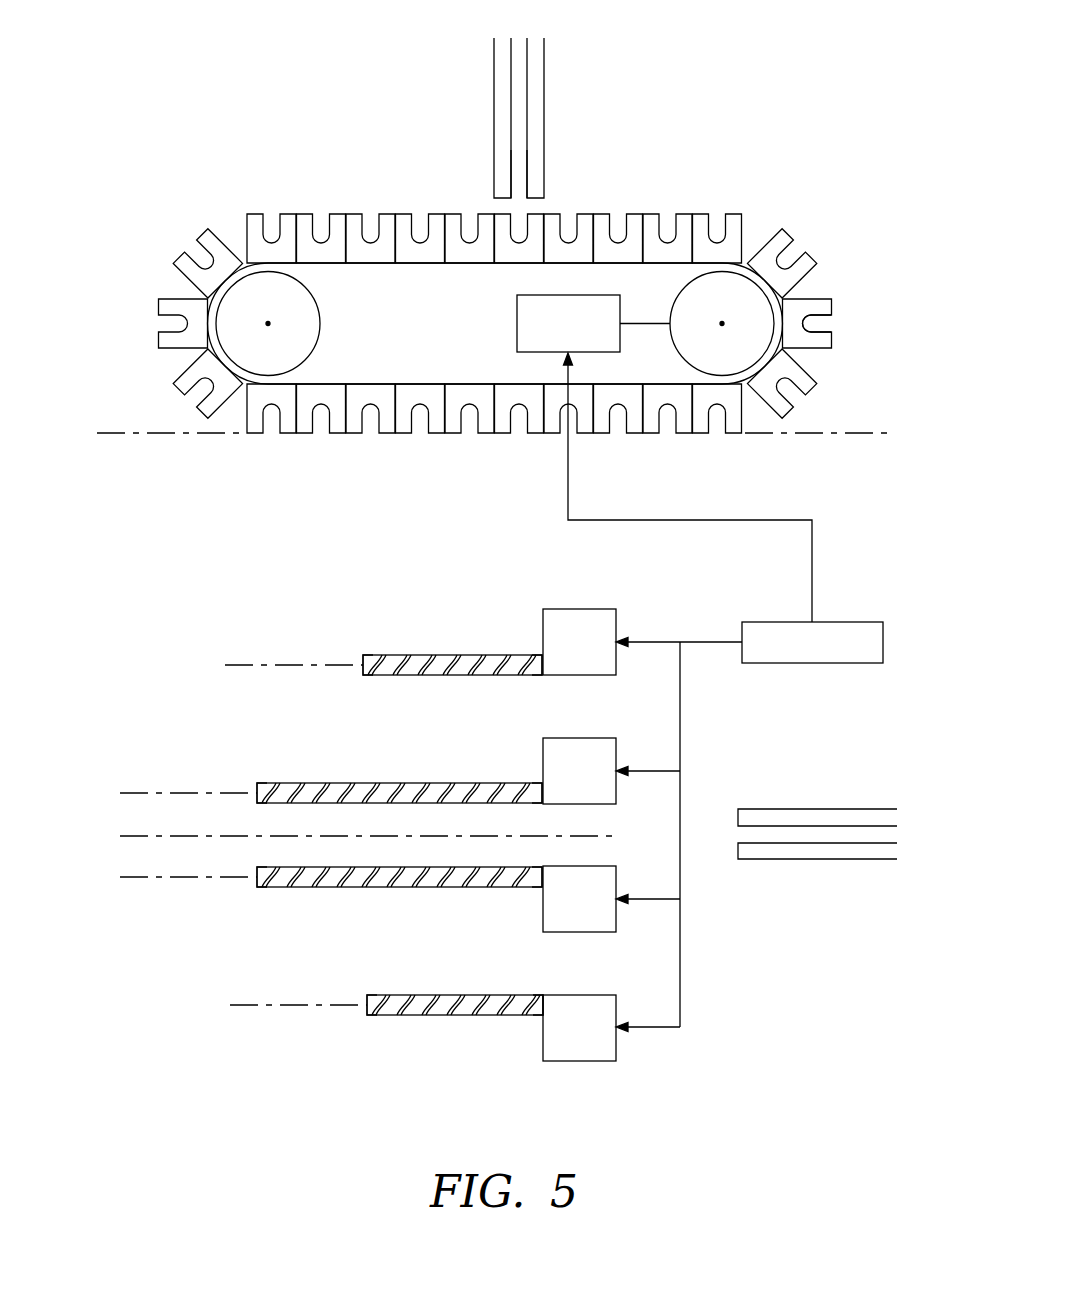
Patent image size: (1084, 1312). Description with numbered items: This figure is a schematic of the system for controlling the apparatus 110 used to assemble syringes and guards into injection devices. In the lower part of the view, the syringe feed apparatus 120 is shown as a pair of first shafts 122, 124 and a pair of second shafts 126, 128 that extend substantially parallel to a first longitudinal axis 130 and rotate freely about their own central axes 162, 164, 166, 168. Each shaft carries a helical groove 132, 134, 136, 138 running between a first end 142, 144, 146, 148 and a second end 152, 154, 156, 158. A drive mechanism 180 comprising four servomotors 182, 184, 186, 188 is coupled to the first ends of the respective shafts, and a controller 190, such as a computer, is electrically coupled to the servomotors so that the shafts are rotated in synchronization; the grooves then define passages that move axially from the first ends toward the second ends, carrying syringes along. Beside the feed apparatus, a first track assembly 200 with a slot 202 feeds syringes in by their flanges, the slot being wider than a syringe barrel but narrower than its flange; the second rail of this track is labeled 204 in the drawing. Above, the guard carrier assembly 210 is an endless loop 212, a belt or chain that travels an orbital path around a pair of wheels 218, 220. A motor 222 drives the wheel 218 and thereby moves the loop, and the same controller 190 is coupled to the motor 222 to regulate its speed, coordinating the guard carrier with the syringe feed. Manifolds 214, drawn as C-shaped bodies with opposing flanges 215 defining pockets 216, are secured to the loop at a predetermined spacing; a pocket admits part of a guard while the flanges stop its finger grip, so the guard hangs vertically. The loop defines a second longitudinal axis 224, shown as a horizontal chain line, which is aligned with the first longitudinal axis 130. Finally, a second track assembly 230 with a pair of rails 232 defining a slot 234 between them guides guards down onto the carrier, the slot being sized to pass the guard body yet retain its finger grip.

The apparatus 110 is at (285, 556).
The syringe feed apparatus 120 is at (487, 1077).
The first shaft 122 is at (370, 887).
The first shaft 124 is at (405, 1016).
The second shaft 126 is at (370, 783).
The second shaft 128 is at (396, 655).
The first longitudinal axis 130 is at (153, 836).
The helical groove 132 is at (437, 888).
The helical groove 134 is at (457, 1016).
The helical groove 136 is at (465, 783).
The helical groove 138 is at (457, 657).
The first end 142 is at (540, 888).
The first end 144 is at (540, 1016).
The first end 146 is at (540, 783).
The first end 148 is at (537, 655).
The second end 152 is at (267, 887).
The second end 154 is at (375, 1016).
The second end 156 is at (267, 783).
The second end 158 is at (373, 655).
The central axis 162 is at (175, 877).
The central axis 164 is at (262, 1005).
The central axis 166 is at (175, 793).
The central axis 168 is at (260, 665).
The drive mechanism 180 is at (590, 597).
The servomotor 182 is at (616, 880).
The servomotor 184 is at (617, 1010).
The servomotor 186 is at (616, 753).
The servomotor 188 is at (616, 624).
The controller 190 is at (852, 622).
The first track assembly 200 is at (828, 868).
The slot 202 is at (773, 838).
The upper guide rail 204 is at (855, 850).
The guard carrier assembly 210 is at (806, 220).
The endless loop 212 is at (417, 264).
The manifold 214 is at (827, 304).
The flange 215 is at (800, 387).
The pocket 216 is at (813, 325).
The wheel 218 is at (320, 325).
The wheel 220 is at (722, 290).
The motor 222 is at (517, 323).
The second longitudinal axis 224 is at (160, 433).
The second track assembly 230 is at (558, 124).
The rail 232 is at (494, 62).
The slot 234 is at (505, 160).